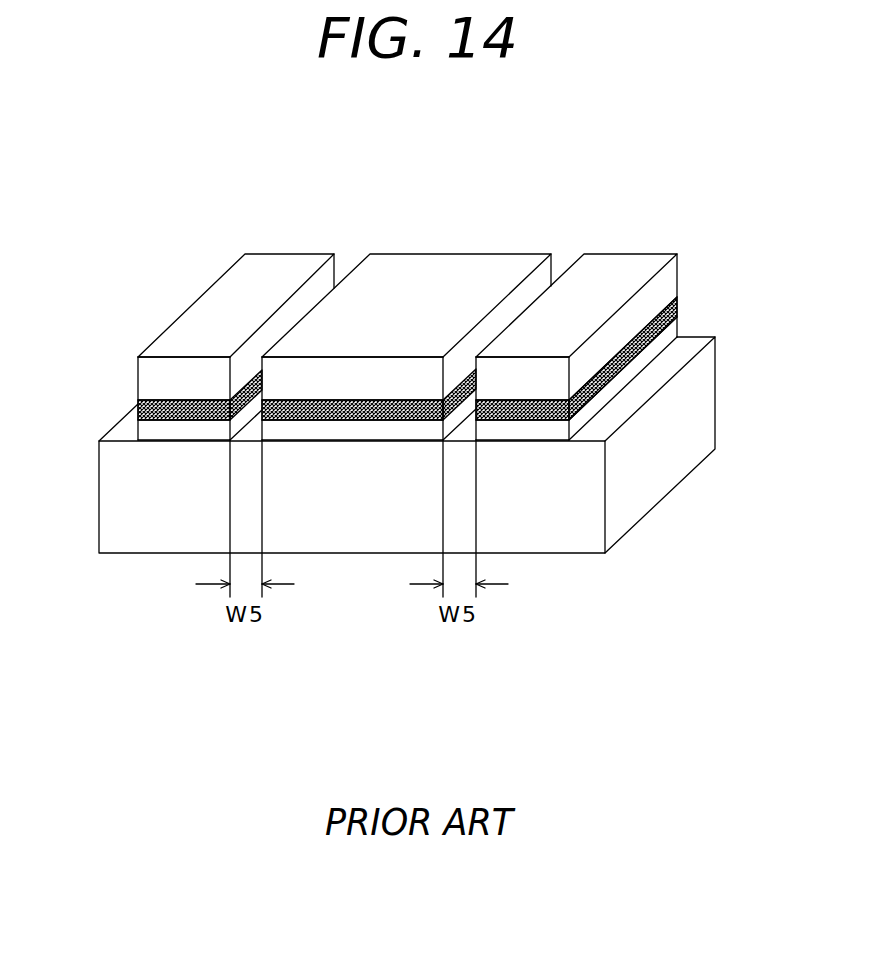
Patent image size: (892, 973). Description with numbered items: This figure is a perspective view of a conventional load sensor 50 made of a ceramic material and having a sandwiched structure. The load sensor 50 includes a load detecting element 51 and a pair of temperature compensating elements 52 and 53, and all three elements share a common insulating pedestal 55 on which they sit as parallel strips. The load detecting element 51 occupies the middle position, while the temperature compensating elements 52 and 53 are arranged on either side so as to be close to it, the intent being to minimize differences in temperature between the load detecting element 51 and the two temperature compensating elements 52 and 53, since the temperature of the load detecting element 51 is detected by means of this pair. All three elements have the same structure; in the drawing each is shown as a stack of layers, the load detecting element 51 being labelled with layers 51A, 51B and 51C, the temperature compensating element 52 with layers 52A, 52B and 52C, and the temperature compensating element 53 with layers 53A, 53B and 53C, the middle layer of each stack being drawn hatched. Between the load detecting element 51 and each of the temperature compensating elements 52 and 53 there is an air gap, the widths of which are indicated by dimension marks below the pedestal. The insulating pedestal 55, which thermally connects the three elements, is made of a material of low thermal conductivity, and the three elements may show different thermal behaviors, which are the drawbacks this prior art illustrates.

The load sensor 50 is at (262, 163).
The load detecting element 51 is at (440, 263).
The upper cladding layer of stripe 51 51A is at (335, 380).
The active layer of stripe 51 51B is at (330, 412).
The lower cladding layer of stripe 51 51C is at (348, 432).
The temperature compensating element 52 is at (282, 263).
The upper cladding layer of stripe 52 52A is at (153, 368).
The active layer of stripe 52 52B is at (153, 422).
The lower cladding layer of stripe 52 52C is at (167, 433).
The temperature compensating element 53 is at (610, 263).
The upper cladding layer of stripe 53 53A is at (665, 282).
The active layer of stripe 53 53B is at (672, 320).
The lower cladding layer of stripe 53 53C is at (663, 345).
The insulating pedestal 55 is at (573, 533).